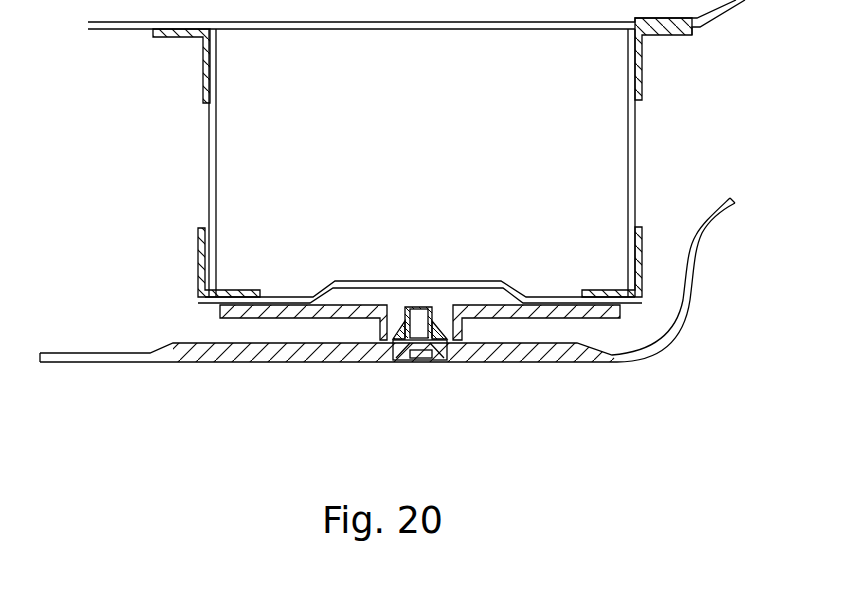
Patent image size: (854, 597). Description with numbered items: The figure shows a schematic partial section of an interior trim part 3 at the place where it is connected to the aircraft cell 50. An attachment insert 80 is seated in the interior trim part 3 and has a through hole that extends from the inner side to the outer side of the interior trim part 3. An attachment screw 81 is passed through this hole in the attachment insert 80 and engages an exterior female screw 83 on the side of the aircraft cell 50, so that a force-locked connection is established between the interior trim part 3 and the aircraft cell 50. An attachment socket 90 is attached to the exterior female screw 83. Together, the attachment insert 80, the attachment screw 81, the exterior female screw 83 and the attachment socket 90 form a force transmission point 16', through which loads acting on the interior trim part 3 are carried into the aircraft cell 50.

The wall of the aircraft cell 50 is at (208, 157).
The attachment socket 90 is at (265, 313).
The force transmission point 16' is at (404, 256).
The exterior female screw 83 is at (442, 307).
The attachment insert 80 is at (402, 349).
The attachment screw 81 is at (434, 353).
The interior trim part 3 is at (287, 364).